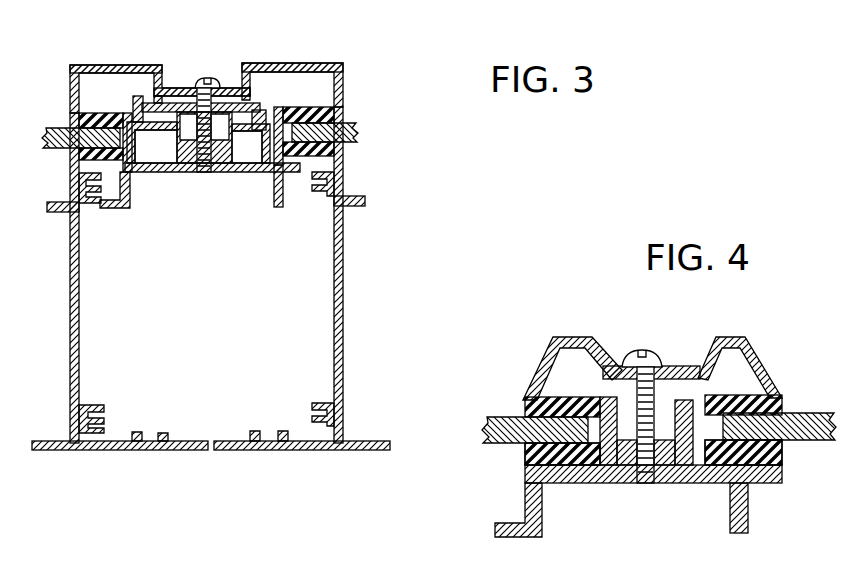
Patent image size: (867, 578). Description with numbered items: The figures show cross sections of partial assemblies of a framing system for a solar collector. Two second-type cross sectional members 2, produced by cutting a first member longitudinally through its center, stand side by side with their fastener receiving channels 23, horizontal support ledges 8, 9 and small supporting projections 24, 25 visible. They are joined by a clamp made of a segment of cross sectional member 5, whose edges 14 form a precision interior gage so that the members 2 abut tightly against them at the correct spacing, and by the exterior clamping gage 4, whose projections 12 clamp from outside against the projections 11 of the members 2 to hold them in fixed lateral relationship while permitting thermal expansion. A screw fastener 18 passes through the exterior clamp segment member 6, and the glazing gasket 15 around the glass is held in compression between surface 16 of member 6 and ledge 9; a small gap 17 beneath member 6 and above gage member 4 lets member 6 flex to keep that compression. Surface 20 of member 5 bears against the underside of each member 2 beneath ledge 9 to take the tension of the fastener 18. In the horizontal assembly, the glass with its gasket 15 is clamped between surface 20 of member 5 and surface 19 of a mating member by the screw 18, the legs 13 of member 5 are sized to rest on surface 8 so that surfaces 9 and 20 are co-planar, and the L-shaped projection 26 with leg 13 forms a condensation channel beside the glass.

In FIG. 3, the second-type cross sectional member 2 is at (128, 452).
In FIG. 3, the exterior clamping gage 4 is at (255, 113).
In FIG. 3, the cross sectional member 5 is at (210, 175).
In FIG. 4, the cross sectional member 5 is at (525, 478).
In FIG. 3, the exterior clamp segment member 6 is at (335, 64).
In FIG. 3, the horizontal support ledge 8 is at (55, 205).
In FIG. 3, the horizontal support ledge 9 is at (72, 154).
In FIG. 4, the horizontal support ledge 9 is at (653, 452).
In FIG. 3, the projection 11 is at (190, 100).
In FIG. 4, the projection 11 is at (651, 372).
In FIG. 3, the projection 12 is at (138, 115).
In FIG. 3, the leg 13 is at (278, 210).
In FIG. 4, the leg 13 is at (730, 518).
In FIG. 3, the edge 14 is at (243, 172).
In FIG. 4, the edge 14 is at (612, 400).
In FIG. 3, the glazing gasket 15 is at (72, 122).
In FIG. 4, the glazing gasket 15 is at (527, 405).
In FIG. 3, the surface 16 is at (100, 68).
In FIG. 3, the gap 17 is at (165, 100).
In FIG. 3, the screw fastener 18 is at (215, 76).
In FIG. 4, the screw fastener 18 is at (645, 358).
In FIG. 4, the surface 19 is at (553, 372).
In FIG. 3, the surface 20 is at (152, 163).
In FIG. 4, the surface 20 is at (527, 455).
In FIG. 3, the fastener receiving channel 23 is at (336, 190).
In FIG. 3, the supporting projection 24 is at (93, 110).
In FIG. 3, the supporting projection 25 is at (137, 433).
In FIG. 3, the L-shaped projection 26 is at (115, 200).
In FIG. 4, the L-shaped projection 26 is at (495, 527).